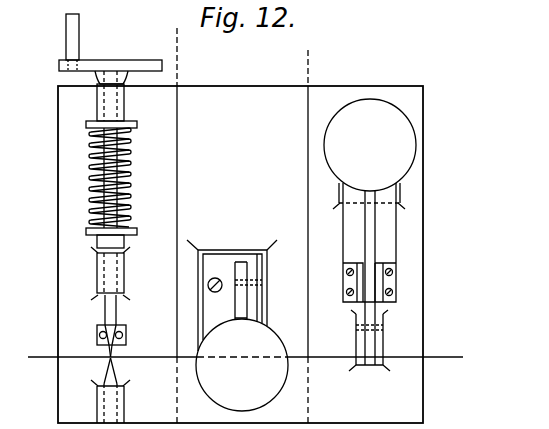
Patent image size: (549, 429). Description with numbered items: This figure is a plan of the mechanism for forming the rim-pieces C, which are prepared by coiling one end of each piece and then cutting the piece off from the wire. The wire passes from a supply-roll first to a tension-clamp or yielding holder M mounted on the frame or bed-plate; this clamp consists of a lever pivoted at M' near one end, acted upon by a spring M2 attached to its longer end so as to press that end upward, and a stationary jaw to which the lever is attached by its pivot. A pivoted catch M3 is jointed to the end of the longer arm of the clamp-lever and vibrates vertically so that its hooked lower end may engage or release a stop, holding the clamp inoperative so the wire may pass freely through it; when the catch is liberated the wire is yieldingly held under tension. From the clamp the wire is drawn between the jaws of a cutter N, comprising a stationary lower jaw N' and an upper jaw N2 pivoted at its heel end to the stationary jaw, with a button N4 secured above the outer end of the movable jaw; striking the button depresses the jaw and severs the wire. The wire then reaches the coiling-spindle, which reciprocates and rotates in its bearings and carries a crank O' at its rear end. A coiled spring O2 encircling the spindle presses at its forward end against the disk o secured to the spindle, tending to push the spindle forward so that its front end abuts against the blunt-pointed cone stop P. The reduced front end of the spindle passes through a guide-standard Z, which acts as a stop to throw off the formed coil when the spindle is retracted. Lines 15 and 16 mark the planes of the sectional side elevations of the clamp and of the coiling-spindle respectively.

The section line 16 is at (210, 42).
The section line 15 is at (275, 57).
The rim-pieces C is at (33, 360).
The crank O' is at (110, 49).
The coiled spring O2 is at (92, 178).
The disk o is at (135, 303).
The guide-standard Z is at (126, 334).
The blunt-pointed cone stop P is at (114, 378).
The cutter N is at (236, 295).
The stationary lower jaw N' is at (260, 287).
The upper jaw N2 is at (238, 310).
The button N4 is at (242, 365).
The pivoted catch M3 is at (368, 167).
The spring M2 is at (347, 233).
The tension-clamp M is at (379, 277).
The pivot M' is at (379, 340).